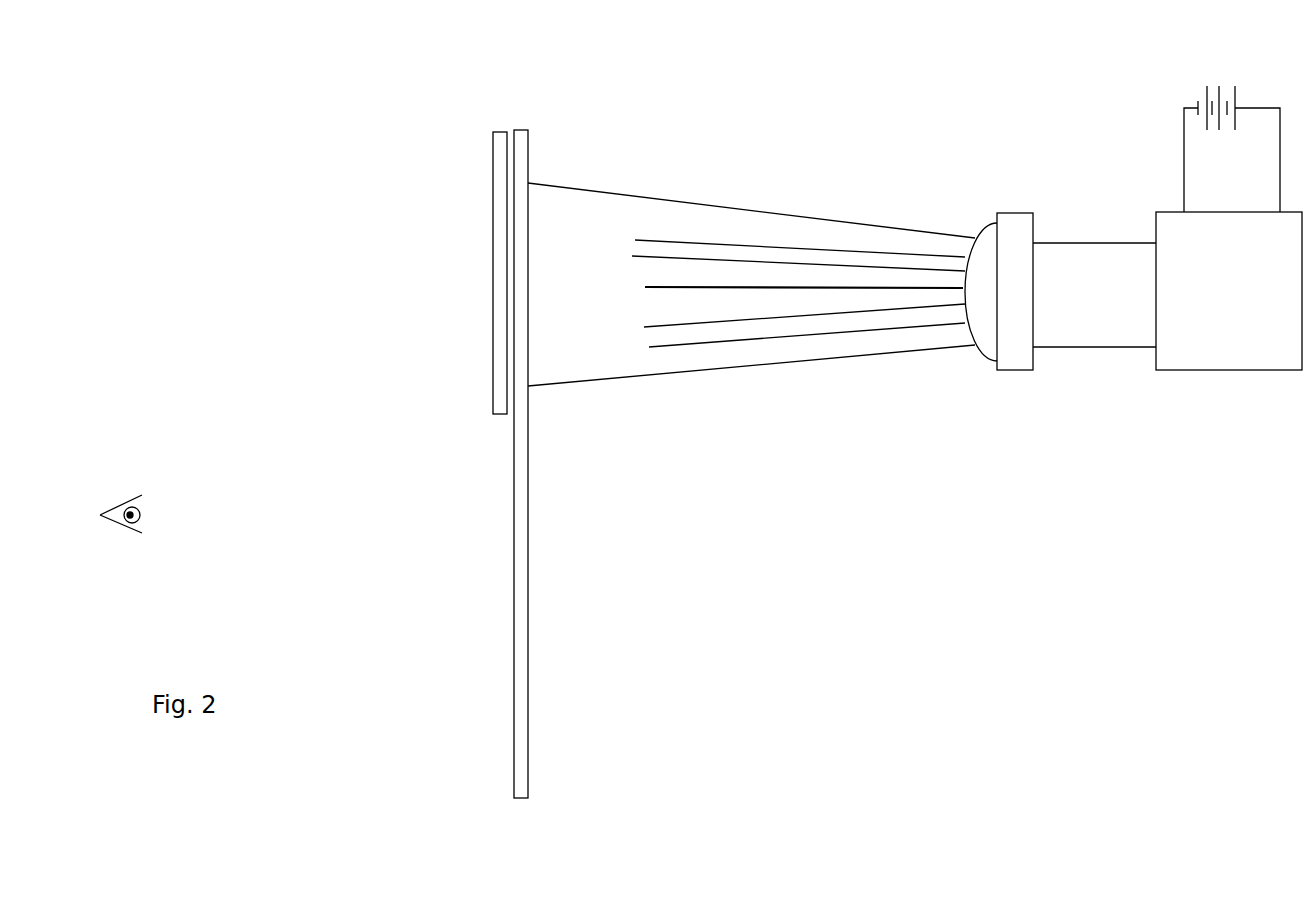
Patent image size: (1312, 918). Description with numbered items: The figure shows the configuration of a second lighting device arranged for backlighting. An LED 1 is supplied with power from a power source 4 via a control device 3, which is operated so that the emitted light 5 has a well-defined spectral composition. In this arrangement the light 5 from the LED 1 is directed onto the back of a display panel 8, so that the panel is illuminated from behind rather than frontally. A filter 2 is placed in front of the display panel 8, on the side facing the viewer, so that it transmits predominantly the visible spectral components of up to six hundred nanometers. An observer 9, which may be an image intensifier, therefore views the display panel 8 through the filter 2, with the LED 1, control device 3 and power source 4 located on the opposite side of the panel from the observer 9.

The LED 1 is at (1017, 348).
The filter 2 is at (499, 160).
The control device 3 is at (1243, 348).
The power source 4 is at (1192, 86).
The emitted light 5 is at (903, 225).
The display panel 8 is at (522, 778).
The observer 9 is at (102, 515).